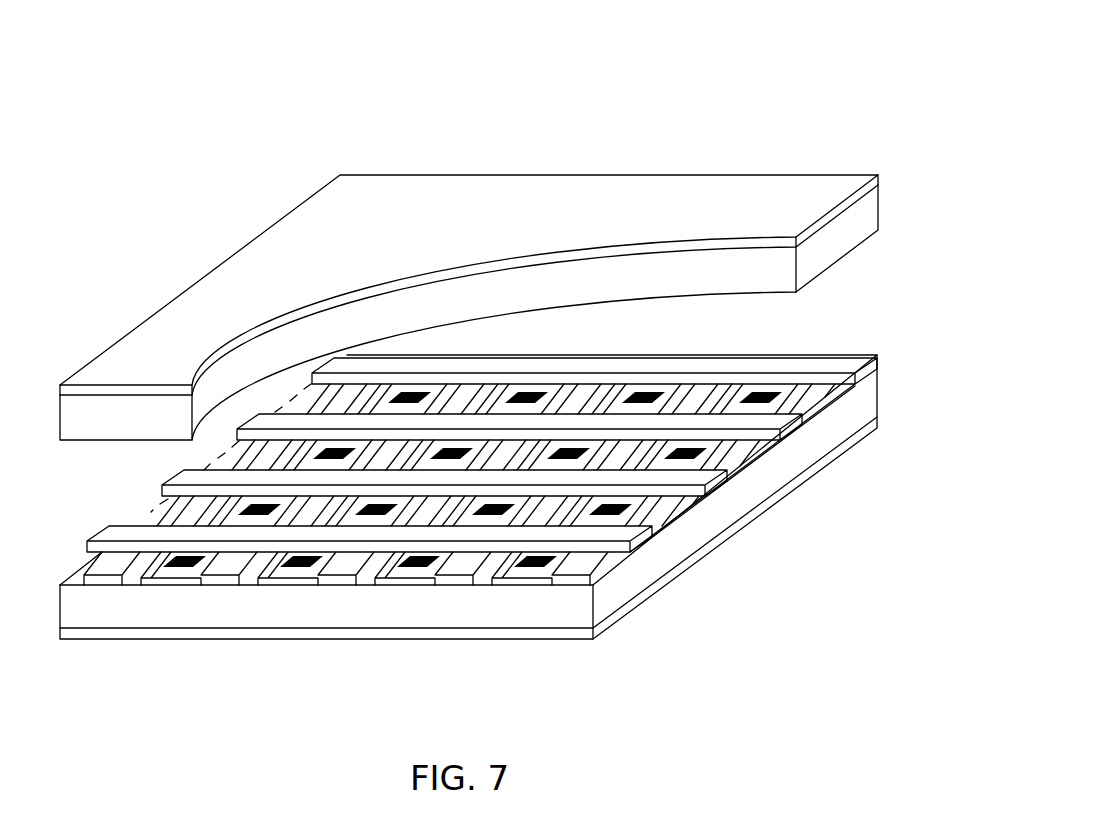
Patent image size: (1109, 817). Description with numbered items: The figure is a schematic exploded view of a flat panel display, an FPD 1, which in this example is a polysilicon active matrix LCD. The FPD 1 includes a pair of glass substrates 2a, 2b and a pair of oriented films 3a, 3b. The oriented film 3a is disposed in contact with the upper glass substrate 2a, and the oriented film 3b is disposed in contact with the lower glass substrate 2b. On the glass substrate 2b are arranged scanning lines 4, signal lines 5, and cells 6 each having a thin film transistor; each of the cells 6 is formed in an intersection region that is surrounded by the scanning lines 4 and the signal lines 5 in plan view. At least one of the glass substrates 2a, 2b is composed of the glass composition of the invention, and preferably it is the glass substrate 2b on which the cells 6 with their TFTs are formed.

The FPD 1 is at (843, 83).
The glass substrate 2a is at (848, 228).
The oriented film 3a is at (832, 193).
The glass substrate 2b is at (858, 408).
The oriented film 3b is at (864, 436).
The scanning lines 4 is at (864, 372).
The signal lines 5 is at (850, 363).
The cells 6 is at (536, 570).